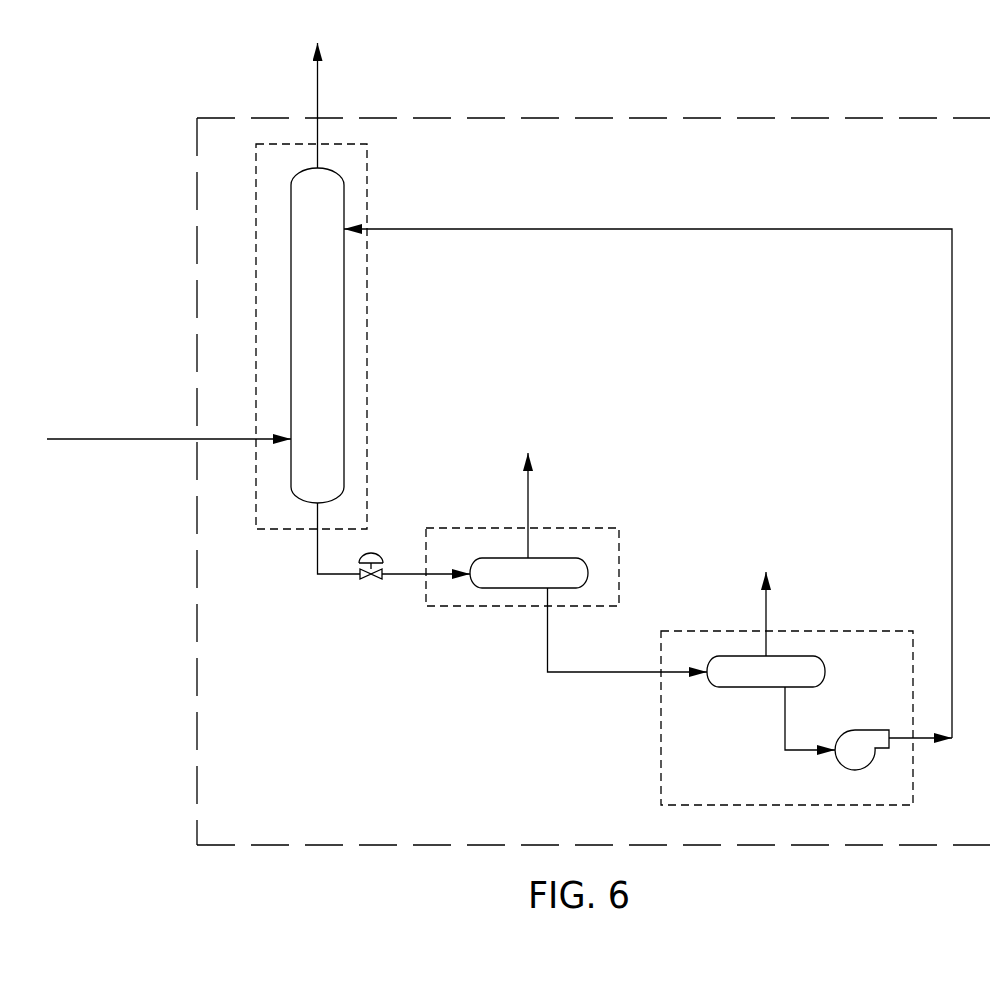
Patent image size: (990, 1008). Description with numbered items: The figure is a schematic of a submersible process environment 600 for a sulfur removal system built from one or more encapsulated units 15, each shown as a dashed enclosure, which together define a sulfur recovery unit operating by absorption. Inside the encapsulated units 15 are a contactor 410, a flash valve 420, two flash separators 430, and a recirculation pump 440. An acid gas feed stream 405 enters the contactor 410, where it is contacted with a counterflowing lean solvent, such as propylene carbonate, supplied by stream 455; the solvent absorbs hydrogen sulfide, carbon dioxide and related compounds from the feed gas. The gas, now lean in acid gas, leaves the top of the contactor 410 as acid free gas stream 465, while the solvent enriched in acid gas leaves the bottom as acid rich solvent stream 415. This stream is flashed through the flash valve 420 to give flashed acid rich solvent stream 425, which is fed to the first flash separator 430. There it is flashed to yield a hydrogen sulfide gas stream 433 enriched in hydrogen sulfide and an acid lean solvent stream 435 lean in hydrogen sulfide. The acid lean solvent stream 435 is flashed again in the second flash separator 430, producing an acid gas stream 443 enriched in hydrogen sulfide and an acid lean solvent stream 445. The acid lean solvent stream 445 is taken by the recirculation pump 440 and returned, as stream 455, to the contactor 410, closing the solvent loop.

The process environment 600 is at (845, 90).
The encapsulated unit 15 is at (367, 282).
The acid gas feed stream 405 is at (99, 438).
The contactor 410 is at (344, 355).
The acid free gas stream 465 is at (318, 86).
The acid rich solvent stream 415 is at (327, 575).
The flash valve 420 is at (383, 556).
The flashed acid rich solvent stream 425 is at (403, 575).
The flash separator 430 is at (488, 589).
The hydrogen sulfide gas stream 433 is at (529, 491).
The acid lean solvent stream 435 is at (548, 636).
The acid gas stream 443 is at (767, 603).
The acid lean solvent stream 445 is at (786, 704).
The recirculation pump 440 is at (862, 769).
The lean solvent stream 455 is at (724, 228).